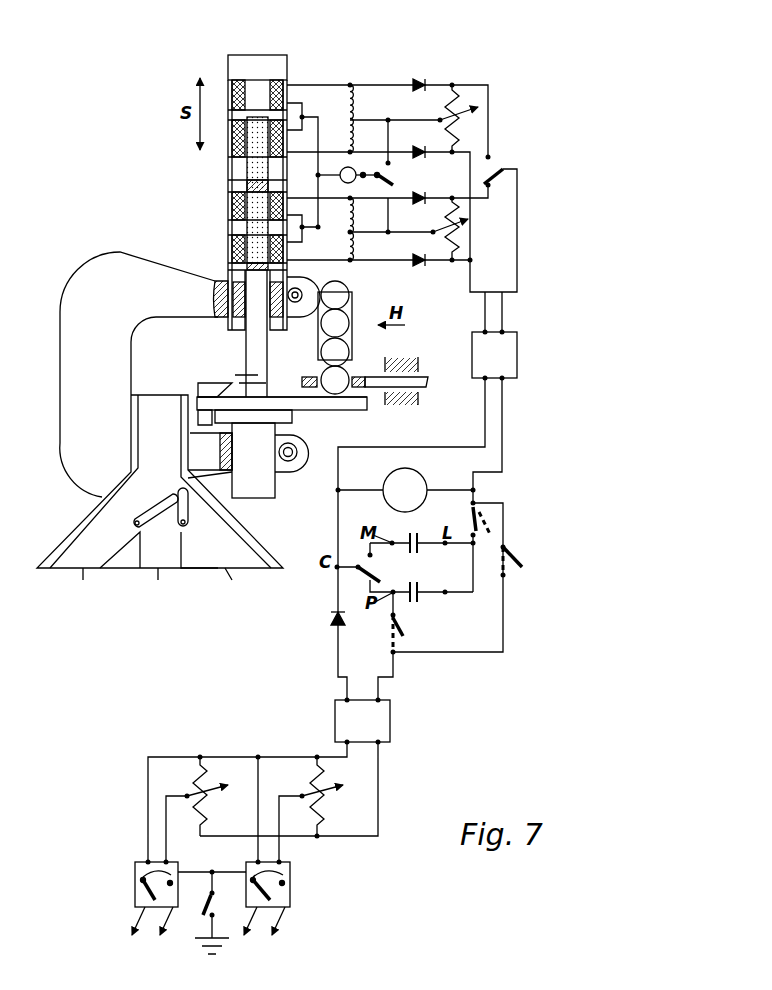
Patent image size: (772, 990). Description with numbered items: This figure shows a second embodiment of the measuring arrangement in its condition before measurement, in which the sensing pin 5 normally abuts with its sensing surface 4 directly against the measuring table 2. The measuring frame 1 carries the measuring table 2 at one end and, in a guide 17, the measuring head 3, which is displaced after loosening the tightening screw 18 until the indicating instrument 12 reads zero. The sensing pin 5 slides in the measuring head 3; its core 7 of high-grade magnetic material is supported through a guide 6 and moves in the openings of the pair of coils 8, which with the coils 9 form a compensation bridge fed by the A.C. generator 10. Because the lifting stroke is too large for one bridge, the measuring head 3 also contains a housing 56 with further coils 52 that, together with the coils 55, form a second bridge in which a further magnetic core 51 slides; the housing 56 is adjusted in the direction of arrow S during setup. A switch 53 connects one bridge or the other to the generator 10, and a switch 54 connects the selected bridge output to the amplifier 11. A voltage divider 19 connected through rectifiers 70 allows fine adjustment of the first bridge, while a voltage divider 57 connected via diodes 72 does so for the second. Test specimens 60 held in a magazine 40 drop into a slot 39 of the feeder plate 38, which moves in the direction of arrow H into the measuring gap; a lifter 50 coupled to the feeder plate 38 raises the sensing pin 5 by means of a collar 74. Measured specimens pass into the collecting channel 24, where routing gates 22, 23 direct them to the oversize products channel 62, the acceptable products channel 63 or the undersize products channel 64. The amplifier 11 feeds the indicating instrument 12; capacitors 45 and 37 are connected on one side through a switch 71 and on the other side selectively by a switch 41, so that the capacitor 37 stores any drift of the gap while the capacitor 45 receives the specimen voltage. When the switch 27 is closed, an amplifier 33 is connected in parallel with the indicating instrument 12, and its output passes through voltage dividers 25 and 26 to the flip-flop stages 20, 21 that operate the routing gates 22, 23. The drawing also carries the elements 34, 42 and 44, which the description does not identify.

The measuring frame 1 is at (64, 436).
The measuring table 2 is at (307, 411).
The measuring head 3 is at (287, 62).
The sensing surface 4 is at (270, 397).
The sensing pin 5 is at (253, 351).
The guide 6 is at (216, 320).
The core 7 is at (230, 248).
The pair of coils 8 is at (228, 232).
The coils 9 is at (348, 250).
The A.C. generator 10 is at (353, 186).
The amplifier 11 is at (508, 365).
The indicating instrument 12 is at (391, 476).
The guide 17 is at (218, 283).
The tightening screw 18 is at (305, 291).
The voltage divider 19 is at (462, 230).
The flip-flop stage 20 is at (134, 880).
The flip-flop stage 21 is at (290, 881).
The movable routing gate 22 is at (147, 508).
The movable routing gate 23 is at (190, 511).
The collecting channel 24 is at (157, 400).
The voltage divider 25 is at (198, 770).
The voltage divider 26 is at (314, 770).
The switch 27 is at (517, 557).
The amplifier 33 is at (392, 722).
The diode 34 is at (332, 621).
The capacitor 37 is at (419, 602).
The feeder plate 38 is at (424, 386).
The slot 39 is at (350, 377).
The magazine 40 is at (352, 302).
The switch 41 is at (360, 573).
The switch 42 is at (402, 634).
The switch 44 is at (200, 910).
The capacitor 45 is at (420, 550).
The lifter 50 is at (210, 390).
The magnetic core 51 is at (245, 166).
The further coils 52 is at (228, 117).
The switch 53 is at (393, 178).
The switch 54 is at (497, 168).
The coils 55 is at (353, 135).
The housing 56 is at (263, 77).
The voltage divider 57 is at (443, 113).
The test specimen 60 is at (338, 391).
The oversize products channel 62 is at (85, 587).
The acceptable products channel 63 is at (136, 569).
The undersize products channel 64 is at (217, 569).
The rectifiers 70 is at (420, 203).
The switch 71 is at (487, 518).
The diodes 72 is at (420, 80).
The collar 74 is at (266, 378).